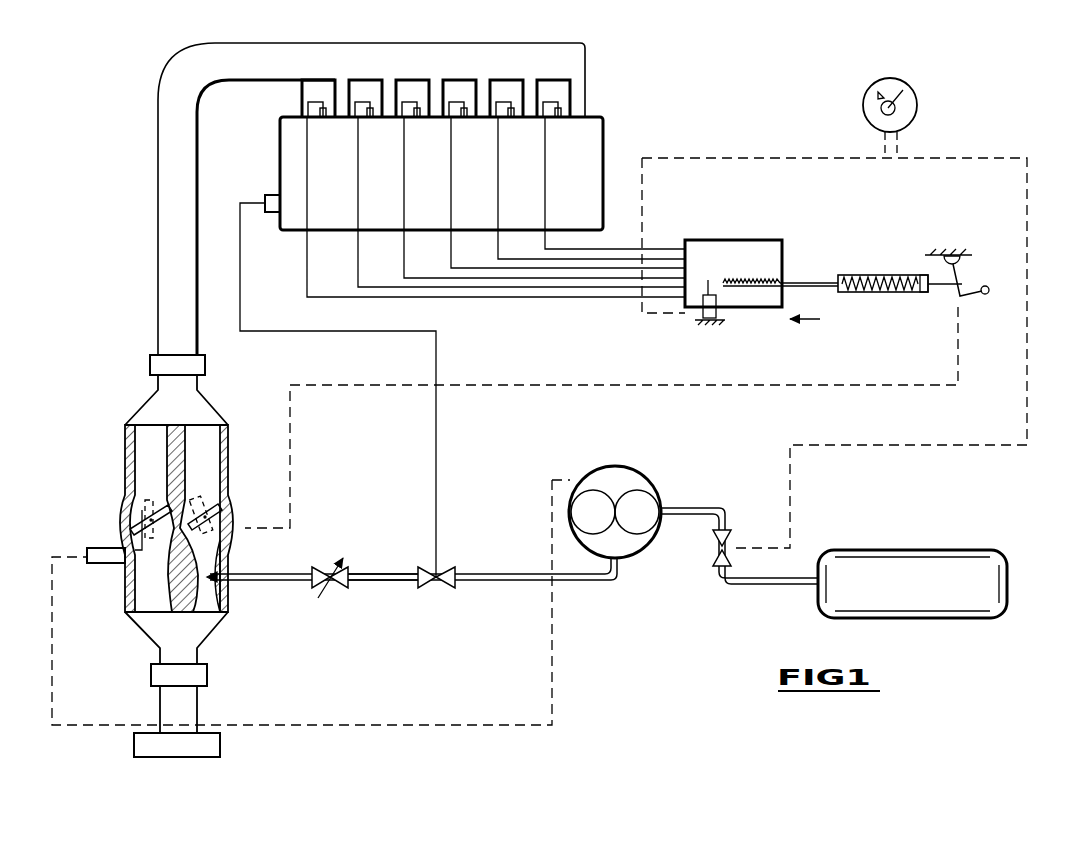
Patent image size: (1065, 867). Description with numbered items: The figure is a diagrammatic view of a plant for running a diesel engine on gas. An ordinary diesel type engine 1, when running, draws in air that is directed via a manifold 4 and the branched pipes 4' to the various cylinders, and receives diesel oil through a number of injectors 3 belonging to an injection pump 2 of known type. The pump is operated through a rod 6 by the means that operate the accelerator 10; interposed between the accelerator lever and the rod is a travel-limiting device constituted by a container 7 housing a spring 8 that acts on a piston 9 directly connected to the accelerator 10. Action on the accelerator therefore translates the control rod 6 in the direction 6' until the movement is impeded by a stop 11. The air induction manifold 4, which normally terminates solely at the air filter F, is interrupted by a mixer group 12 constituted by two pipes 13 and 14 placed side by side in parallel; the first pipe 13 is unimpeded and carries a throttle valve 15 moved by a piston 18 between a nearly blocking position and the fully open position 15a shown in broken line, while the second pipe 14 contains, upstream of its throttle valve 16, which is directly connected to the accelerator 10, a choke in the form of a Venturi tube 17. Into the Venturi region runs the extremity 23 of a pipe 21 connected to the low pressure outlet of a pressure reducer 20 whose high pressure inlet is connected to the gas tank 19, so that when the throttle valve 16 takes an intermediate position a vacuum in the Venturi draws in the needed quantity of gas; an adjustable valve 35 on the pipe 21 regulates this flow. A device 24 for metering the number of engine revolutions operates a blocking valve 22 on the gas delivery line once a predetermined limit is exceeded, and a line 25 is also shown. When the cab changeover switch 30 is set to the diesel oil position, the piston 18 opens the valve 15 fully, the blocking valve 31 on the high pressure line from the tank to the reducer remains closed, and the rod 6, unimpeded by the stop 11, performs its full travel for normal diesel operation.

The diesel type engine 1 is at (580, 139).
The injection pump 2 is at (738, 262).
The injectors 3 is at (308, 110).
The manifold 4 is at (383, 200).
The branched pipes 4' is at (413, 199).
The rod 6 is at (780, 230).
The direction of translation 6' is at (809, 335).
The container 7 is at (860, 270).
The spring 8 is at (895, 280).
The piston 9 is at (922, 293).
The accelerator 10 is at (978, 280).
The stop 11 is at (708, 282).
The mixer group 12 is at (232, 402).
The first pipe 13 is at (145, 440).
The second pipe 14 is at (200, 440).
The throttle valve 15 is at (125, 522).
The open position of throttle valve 15a is at (150, 500).
The throttle valve 16 is at (205, 515).
The Venturi tube 17 is at (232, 558).
The piston 18 is at (98, 565).
The gas tank 19 is at (886, 592).
The pressure reducer 20 is at (614, 478).
The pipe 21 is at (366, 582).
The blocking valve 22 is at (440, 592).
The extremity 23 is at (225, 595).
The device for metering the number of revolutions 24 is at (265, 200).
The control line 25 is at (437, 448).
The cab changeover switch 30 is at (912, 108).
The blocking valve 31 is at (718, 565).
The adjustable valve 35 is at (338, 544).
The air filter F is at (220, 745).